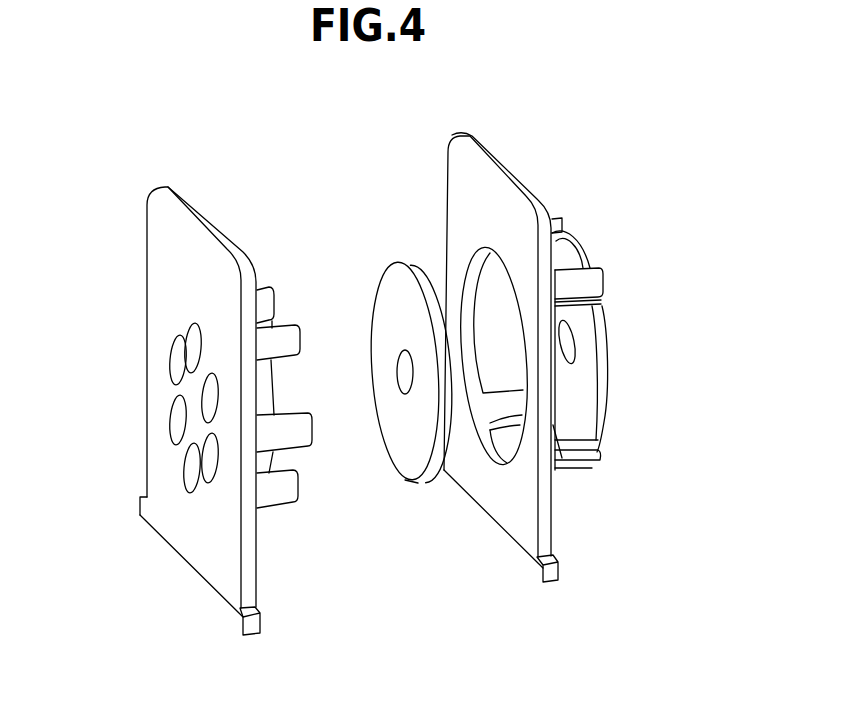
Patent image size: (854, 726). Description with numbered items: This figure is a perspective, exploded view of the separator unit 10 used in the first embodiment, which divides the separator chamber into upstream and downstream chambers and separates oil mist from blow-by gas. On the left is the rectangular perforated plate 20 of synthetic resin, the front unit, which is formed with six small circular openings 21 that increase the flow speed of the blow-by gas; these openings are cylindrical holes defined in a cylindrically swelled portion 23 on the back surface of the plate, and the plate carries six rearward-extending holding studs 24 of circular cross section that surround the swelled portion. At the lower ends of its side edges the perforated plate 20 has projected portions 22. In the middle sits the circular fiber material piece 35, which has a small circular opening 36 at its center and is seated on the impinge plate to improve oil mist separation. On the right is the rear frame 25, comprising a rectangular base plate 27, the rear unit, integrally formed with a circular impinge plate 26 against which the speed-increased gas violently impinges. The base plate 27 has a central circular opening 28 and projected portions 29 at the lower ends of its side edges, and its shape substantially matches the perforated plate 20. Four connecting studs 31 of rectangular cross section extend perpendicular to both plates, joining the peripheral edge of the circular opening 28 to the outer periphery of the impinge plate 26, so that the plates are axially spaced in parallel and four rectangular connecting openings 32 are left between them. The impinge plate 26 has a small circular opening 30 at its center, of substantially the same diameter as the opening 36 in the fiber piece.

The separator unit 10 is at (301, 152).
The rectangular perforated plate 20 is at (151, 171).
The small circular openings 21 is at (185, 485).
The projected portions 22 is at (138, 498).
The cylindrically swelled portion 23 is at (272, 383).
The holding studs 24 is at (282, 495).
The rear frame 25 is at (509, 138).
The impinge plate 26 is at (580, 241).
The base plate 27 is at (502, 168).
The circular opening 28 is at (490, 451).
The projected portions 29 is at (538, 566).
The small circular opening 30 is at (573, 350).
The connecting studs 31 is at (597, 280).
The rectangular connecting openings 32 is at (575, 423).
The fiber material piece 35 is at (379, 268).
The small circular opening 36 is at (410, 385).